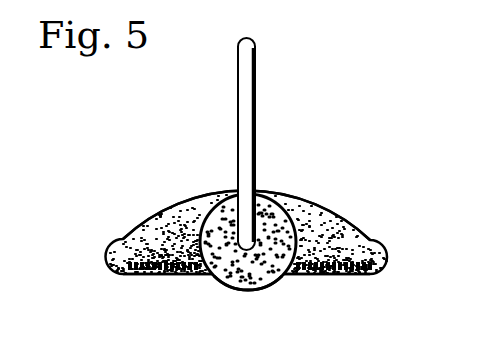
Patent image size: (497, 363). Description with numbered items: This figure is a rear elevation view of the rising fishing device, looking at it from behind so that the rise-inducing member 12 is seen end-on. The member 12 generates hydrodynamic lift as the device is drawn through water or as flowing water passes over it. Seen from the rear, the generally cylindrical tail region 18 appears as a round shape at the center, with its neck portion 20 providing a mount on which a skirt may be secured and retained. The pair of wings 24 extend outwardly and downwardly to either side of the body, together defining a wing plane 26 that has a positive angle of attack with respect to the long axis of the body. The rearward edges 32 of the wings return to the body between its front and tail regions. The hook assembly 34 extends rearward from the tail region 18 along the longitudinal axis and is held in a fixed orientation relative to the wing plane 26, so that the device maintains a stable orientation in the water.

The rise-inducing member 12 is at (215, 192).
The tail region 18 is at (257, 270).
The neck portion 20 is at (268, 286).
The wings 24 is at (247, 238).
The wing plane 26 is at (193, 198).
The rearward edges 32 is at (150, 278).
The hook assembly 34 is at (256, 102).